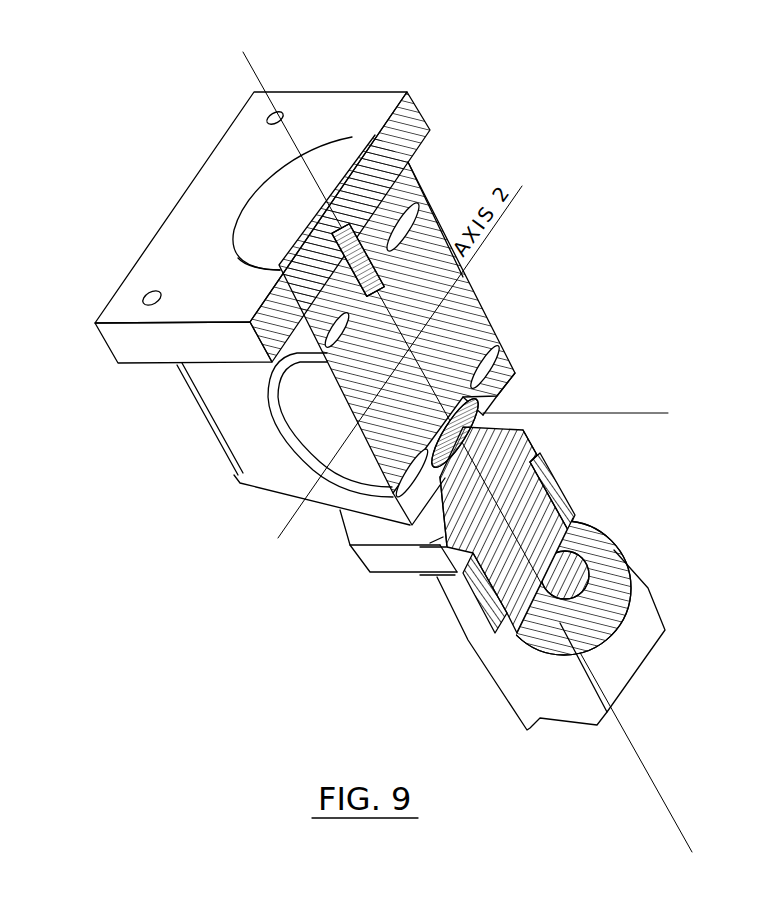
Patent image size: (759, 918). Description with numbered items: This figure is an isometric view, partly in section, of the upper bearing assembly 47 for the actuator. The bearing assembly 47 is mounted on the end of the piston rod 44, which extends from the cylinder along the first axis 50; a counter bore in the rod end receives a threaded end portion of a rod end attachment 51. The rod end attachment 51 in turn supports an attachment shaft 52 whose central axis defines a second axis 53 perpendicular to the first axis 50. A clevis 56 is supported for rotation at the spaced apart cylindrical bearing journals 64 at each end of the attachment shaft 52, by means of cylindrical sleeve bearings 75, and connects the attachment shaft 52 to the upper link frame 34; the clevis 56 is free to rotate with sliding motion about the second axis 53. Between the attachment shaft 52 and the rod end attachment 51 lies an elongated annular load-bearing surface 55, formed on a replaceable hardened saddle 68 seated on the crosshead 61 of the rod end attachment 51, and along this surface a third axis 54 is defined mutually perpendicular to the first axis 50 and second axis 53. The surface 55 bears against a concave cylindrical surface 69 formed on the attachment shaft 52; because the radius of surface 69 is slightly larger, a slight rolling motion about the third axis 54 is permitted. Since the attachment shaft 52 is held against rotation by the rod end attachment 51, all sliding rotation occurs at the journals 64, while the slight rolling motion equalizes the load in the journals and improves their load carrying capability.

The upper link frame 34 is at (353, 102).
The cylindrical bearing journals 64 is at (383, 210).
The cylindrical sleeve bearings 75 is at (417, 208).
The second axis 53 is at (487, 245).
The attachment shaft 52 is at (462, 330).
The replaceable hardened saddle 68 is at (512, 377).
The third axis 54 is at (638, 413).
The elongated annular load-bearing surface 55 is at (458, 400).
The concave cylindrical surface 69 is at (450, 455).
The piston rod 44 is at (648, 588).
The clevis 56 is at (220, 432).
The bearing assembly 47 is at (240, 510).
The rod end attachment 51 is at (380, 553).
The crosshead 61 is at (440, 545).
The first axis 50 is at (482, 452).